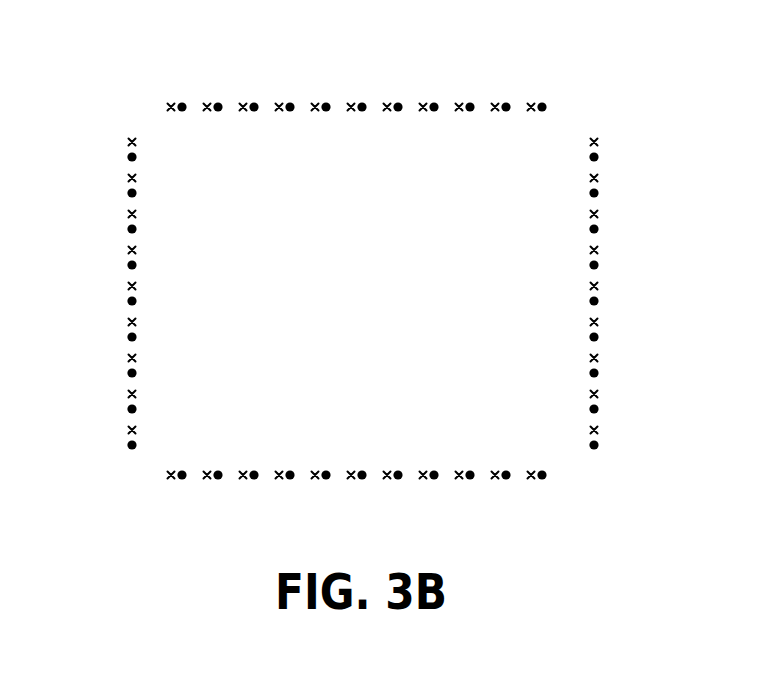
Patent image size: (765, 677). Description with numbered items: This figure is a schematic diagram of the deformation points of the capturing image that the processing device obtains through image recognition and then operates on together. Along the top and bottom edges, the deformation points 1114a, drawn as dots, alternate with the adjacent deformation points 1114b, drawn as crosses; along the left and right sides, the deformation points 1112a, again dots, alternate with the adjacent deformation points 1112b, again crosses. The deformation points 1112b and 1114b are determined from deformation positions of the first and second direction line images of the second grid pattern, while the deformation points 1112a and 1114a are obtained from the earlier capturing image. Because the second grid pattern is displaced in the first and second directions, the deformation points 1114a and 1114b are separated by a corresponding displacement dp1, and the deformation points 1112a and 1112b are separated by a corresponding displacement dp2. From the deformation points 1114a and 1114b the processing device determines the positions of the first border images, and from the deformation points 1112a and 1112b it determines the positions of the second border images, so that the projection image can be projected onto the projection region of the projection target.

The deformation points 1112a is at (598, 156).
The deformation points 1112b is at (597, 250).
The deformation points 1114a is at (362, 103).
The deformation points 1114b is at (279, 103).
The displacement dp1 is at (207, 101).
The displacement dp2 is at (126, 157).